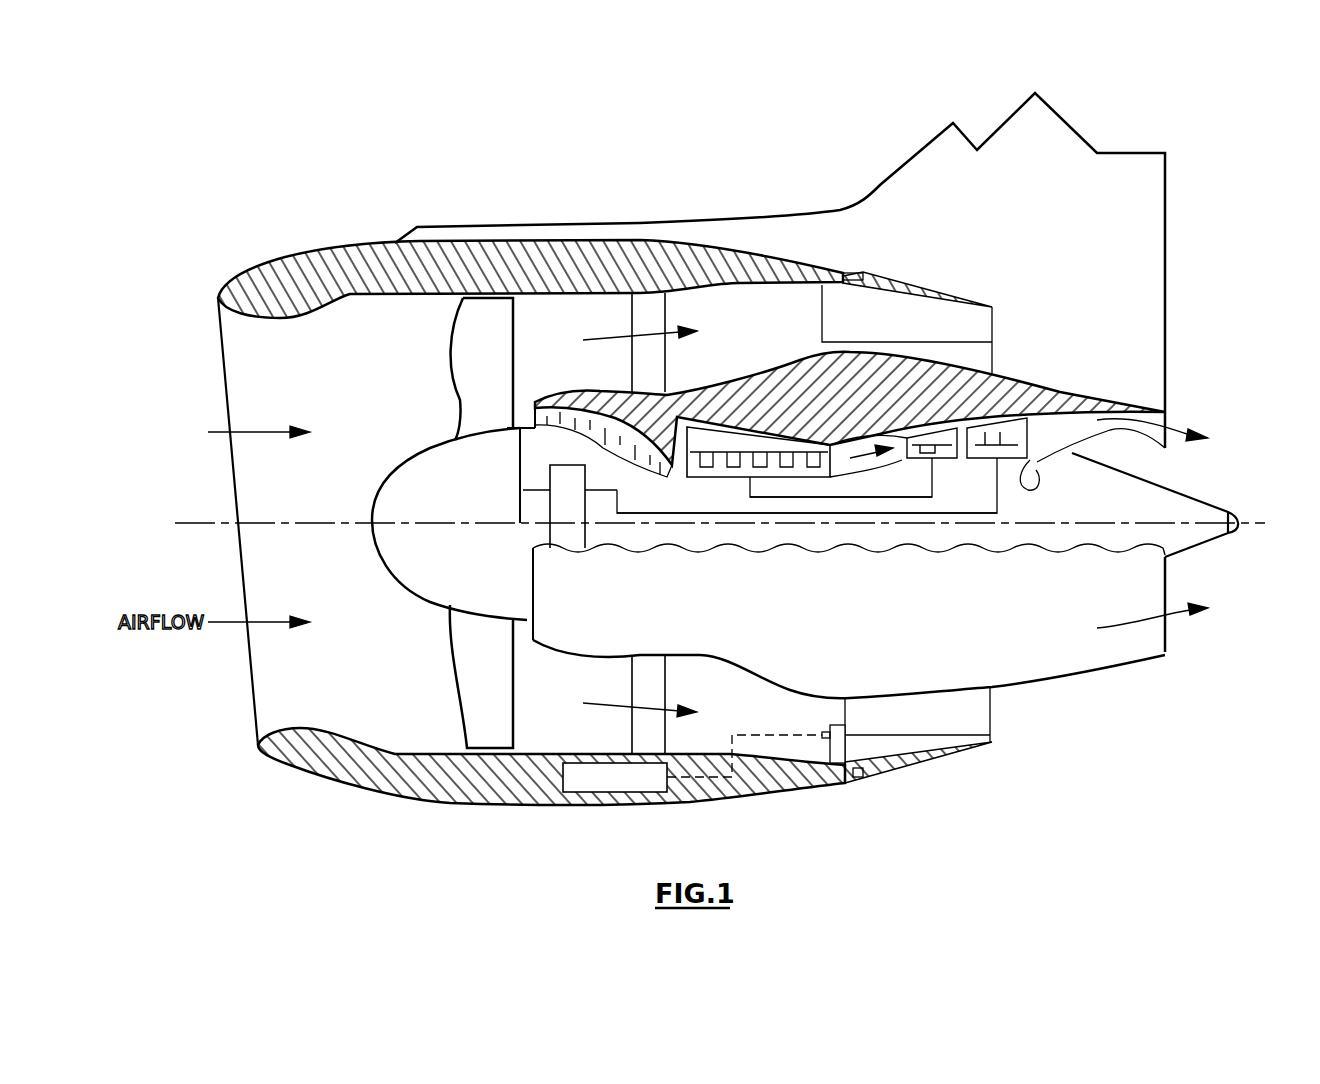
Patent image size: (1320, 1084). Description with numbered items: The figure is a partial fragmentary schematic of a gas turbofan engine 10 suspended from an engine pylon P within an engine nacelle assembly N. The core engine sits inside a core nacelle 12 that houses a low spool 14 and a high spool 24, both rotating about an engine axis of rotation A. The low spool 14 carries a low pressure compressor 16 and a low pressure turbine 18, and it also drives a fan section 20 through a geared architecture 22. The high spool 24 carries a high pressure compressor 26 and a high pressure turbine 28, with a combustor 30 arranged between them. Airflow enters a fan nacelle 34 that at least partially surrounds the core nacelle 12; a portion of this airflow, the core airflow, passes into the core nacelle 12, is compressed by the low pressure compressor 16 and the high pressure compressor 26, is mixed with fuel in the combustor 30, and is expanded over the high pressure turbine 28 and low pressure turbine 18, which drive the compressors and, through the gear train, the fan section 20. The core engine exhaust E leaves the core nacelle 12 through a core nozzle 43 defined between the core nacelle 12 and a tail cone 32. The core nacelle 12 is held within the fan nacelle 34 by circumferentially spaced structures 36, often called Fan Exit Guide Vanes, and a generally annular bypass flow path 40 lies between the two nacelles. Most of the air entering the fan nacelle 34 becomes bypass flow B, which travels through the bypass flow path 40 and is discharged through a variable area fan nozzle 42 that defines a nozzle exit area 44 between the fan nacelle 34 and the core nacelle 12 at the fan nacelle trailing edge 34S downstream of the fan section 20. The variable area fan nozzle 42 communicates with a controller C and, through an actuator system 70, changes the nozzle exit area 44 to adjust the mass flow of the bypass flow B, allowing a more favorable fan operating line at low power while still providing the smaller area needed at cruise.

The gas turbofan engine 10 is at (318, 200).
The core nacelle 12 is at (1010, 383).
The low spool 14 is at (813, 518).
The low pressure compressor 16 is at (645, 490).
The low pressure turbine 18 is at (1038, 478).
The fan section 20 is at (455, 680).
The geared architecture 22 is at (570, 540).
The high spool 24 is at (787, 498).
The high pressure compressor 26 is at (727, 477).
The high pressure turbine 28 is at (948, 460).
The combustor 30 is at (878, 468).
The tail cone 32 is at (1167, 497).
The fan nacelle 34 is at (691, 270).
The fan nacelle trailing edge 34S is at (1000, 302).
The circumferentially spaced structures (Fan Exit Guide Vanes) 36 is at (657, 368).
The bypass flow path 40 is at (577, 334).
The variable area fan nozzle 42 is at (848, 800).
The core nozzle 43 is at (1167, 417).
The nozzle exit area 44 is at (992, 718).
The actuator system 70 is at (704, 788).
The engine nacelle assembly N is at (628, 225).
The engine pylon P is at (1137, 232).
The engine axis of rotation A is at (1262, 527).
The core engine exhaust E is at (1166, 650).
The bypass flow B is at (617, 702).
The controller C is at (632, 802).